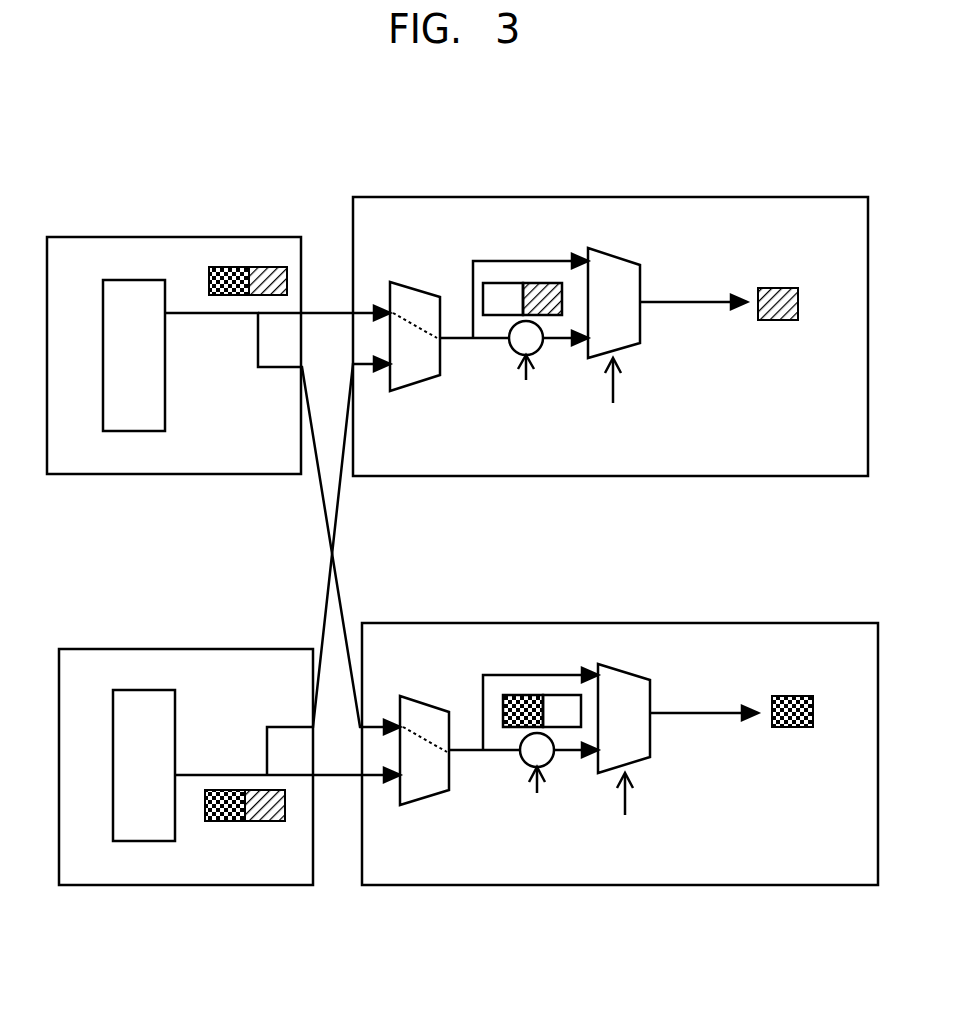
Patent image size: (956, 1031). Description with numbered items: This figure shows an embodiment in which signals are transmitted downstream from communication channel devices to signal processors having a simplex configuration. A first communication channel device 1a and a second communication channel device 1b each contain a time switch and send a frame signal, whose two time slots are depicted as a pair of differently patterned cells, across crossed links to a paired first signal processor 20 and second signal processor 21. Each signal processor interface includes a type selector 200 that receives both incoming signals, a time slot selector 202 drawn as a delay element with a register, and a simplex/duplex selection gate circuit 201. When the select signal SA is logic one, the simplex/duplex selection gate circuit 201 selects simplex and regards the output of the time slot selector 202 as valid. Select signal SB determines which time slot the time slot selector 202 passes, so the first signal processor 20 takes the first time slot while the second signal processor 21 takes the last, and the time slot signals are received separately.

The #0 communication channel device 1a is at (173, 237).
The #1 communication channel device 1b is at (236, 649).
The #0 signal processor 20 is at (642, 197).
The #1 signal processor 21 is at (652, 623).
The type selector 200 is at (412, 390).
The simplex/duplex selection gate circuit 201 is at (640, 343).
The time slot selector 202 is at (510, 350).